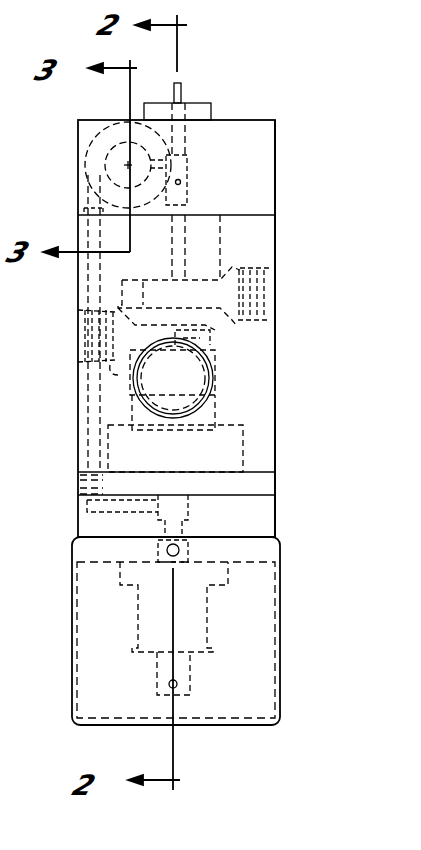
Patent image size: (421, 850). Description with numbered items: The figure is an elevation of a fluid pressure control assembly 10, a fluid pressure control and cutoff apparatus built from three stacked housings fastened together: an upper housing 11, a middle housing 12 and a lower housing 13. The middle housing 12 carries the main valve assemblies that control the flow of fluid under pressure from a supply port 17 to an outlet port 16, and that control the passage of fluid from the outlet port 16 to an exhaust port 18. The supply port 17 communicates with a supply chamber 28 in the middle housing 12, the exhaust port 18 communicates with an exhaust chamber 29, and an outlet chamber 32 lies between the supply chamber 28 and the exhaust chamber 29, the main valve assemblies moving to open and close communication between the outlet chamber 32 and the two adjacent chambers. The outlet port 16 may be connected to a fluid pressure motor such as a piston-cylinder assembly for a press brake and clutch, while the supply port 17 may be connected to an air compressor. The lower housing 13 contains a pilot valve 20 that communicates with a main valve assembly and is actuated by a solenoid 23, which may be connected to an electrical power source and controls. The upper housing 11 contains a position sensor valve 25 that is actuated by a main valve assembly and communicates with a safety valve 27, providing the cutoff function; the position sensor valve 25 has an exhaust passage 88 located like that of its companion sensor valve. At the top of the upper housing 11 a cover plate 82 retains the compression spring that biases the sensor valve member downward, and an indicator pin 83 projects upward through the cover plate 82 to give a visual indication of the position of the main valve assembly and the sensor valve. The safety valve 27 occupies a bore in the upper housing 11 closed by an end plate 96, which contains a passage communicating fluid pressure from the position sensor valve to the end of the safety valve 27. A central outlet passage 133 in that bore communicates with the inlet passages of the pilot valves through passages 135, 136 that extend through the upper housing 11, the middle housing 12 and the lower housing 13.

The fluid pressure control assembly 10 is at (290, 202).
The upper housing 11 is at (265, 120).
The middle housing 12 is at (265, 237).
The lower housing 13 is at (265, 508).
The outlet port 16 is at (80, 352).
The supply port 17 is at (270, 280).
The exhaust port 18 is at (160, 408).
The pilot valve 20 is at (185, 520).
The solenoid 23 is at (207, 625).
The position sensor valve 25 is at (187, 160).
The safety valve 27 is at (88, 145).
The supply chamber 28 is at (183, 295).
The exhaust chamber 29 is at (200, 378).
The outlet chamber 32 is at (210, 340).
The cover plate 82 is at (211, 108).
The indicator pin 83 is at (181, 92).
The exhaust passage 88 is at (181, 182).
The end plate 96 is at (268, 160).
The central outlet passage 133 is at (108, 165).
The passage 135 is at (90, 448).
The passage 136 is at (100, 200).